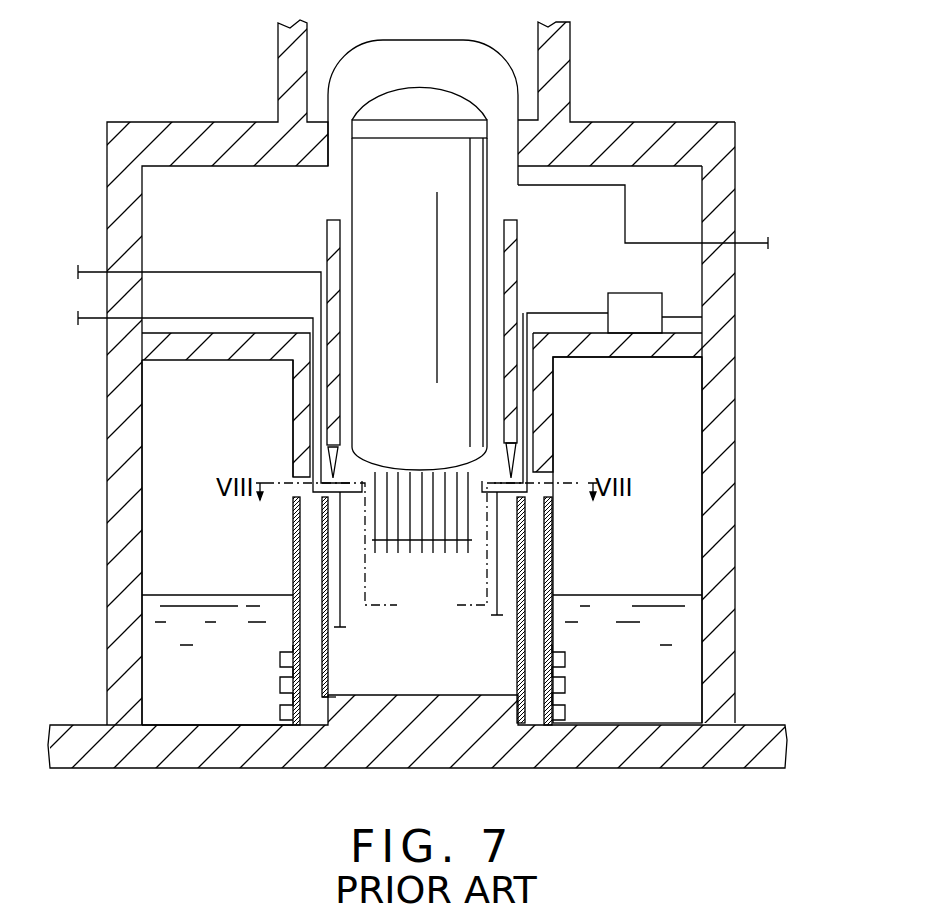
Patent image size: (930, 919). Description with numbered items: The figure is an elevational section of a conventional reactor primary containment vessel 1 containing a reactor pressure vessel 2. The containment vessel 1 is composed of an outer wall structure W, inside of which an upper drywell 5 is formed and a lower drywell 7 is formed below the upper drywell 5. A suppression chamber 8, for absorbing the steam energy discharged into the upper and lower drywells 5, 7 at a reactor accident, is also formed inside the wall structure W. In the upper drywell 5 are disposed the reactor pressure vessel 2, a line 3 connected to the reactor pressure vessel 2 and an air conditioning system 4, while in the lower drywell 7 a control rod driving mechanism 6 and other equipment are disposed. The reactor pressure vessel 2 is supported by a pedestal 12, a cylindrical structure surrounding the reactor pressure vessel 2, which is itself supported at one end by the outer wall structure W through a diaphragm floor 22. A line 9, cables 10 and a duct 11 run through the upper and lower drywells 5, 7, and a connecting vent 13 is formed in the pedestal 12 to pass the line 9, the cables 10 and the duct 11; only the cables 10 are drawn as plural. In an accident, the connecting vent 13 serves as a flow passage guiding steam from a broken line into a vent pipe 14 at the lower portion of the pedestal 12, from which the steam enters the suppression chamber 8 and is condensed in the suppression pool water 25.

The reactor primary containment vessel 1 is at (611, 112).
The outer wall structure W is at (737, 138).
The reactor pressure vessel 2 is at (352, 195).
The line 3 is at (685, 242).
The air conditioning system 4 is at (700, 311).
The upper drywell 5 is at (157, 185).
The control rod driving mechanism 6 is at (372, 522).
The lower drywell 7 is at (457, 672).
The suppression chamber 8 is at (685, 428).
The line 9 is at (167, 268).
The cable 10 is at (160, 312).
The duct 11 is at (563, 313).
The pedestal 12 is at (292, 408).
The connecting vent 13 is at (530, 432).
The vent pipe 14 is at (533, 547).
The diaphragm floor 22 is at (197, 360).
The suppression pool water 25 is at (224, 697).